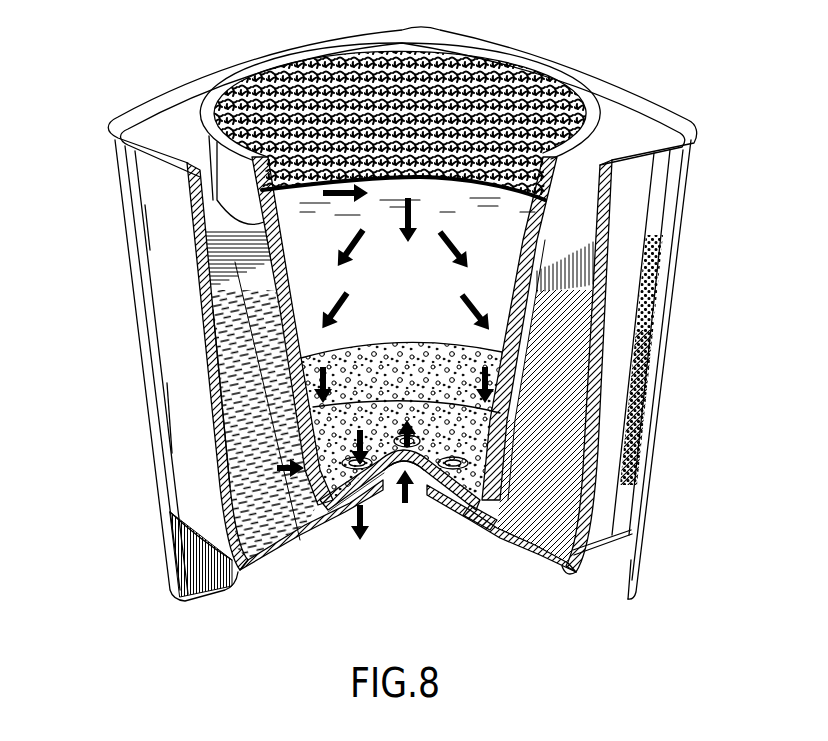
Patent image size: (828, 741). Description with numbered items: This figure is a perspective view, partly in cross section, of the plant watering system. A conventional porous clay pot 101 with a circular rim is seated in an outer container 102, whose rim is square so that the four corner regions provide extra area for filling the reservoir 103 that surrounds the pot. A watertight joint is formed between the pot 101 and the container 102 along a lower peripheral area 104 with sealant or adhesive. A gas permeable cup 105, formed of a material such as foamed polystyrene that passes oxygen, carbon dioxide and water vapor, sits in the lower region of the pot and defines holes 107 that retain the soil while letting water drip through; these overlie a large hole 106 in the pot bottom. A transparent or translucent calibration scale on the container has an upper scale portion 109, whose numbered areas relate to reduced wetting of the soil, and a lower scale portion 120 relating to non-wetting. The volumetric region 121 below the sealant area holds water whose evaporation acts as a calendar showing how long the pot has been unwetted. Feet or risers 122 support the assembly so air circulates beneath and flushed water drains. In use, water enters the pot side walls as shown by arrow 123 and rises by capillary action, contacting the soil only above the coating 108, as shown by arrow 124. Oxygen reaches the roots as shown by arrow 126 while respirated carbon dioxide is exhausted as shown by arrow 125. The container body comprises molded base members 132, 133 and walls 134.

The porous clay pot 101 is at (527, 80).
The outer container 102 is at (617, 93).
The reservoir 103 is at (633, 113).
The lower peripheral area 104 is at (297, 530).
The gas permeable cup 105 is at (438, 352).
The large hole 106 is at (370, 483).
The holes 107 is at (417, 483).
The coating 108 is at (293, 257).
The upper scale portion 109 is at (657, 318).
The lower scale portion 120 is at (650, 360).
The volumetric region 121 is at (568, 577).
The feet or risers 122 is at (627, 578).
The arrow 123 is at (233, 458).
The arrow 124 is at (277, 190).
The arrow 125 is at (347, 540).
The arrow 126 is at (410, 510).
The base member 132 is at (513, 533).
The base member 133 is at (540, 547).
The walls 134 is at (183, 487).